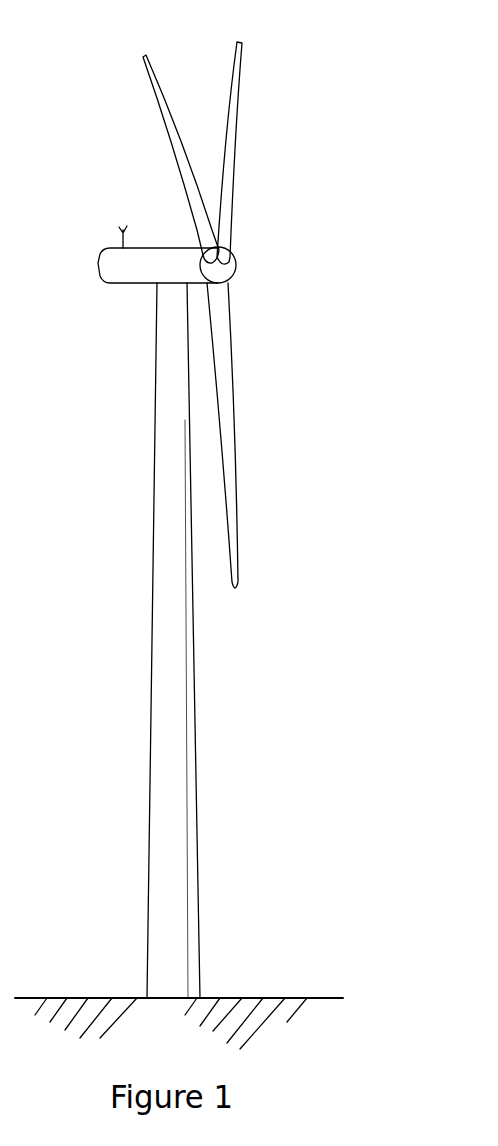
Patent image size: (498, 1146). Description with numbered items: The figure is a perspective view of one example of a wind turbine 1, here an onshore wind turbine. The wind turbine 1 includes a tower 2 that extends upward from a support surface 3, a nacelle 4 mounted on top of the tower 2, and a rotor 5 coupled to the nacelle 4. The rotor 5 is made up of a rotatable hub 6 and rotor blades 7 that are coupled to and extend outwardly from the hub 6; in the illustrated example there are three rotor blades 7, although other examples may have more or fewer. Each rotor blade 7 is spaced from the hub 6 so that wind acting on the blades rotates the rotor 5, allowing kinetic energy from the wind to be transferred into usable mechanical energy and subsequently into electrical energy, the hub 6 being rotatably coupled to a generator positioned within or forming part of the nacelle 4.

The wind turbine 1 is at (342, 106).
The tower 2 is at (160, 741).
The support surface 3 is at (85, 997).
The nacelle 4 is at (135, 284).
The rotor 5 is at (240, 242).
The rotatable hub 6 is at (238, 263).
The rotor blade 7 is at (230, 73).